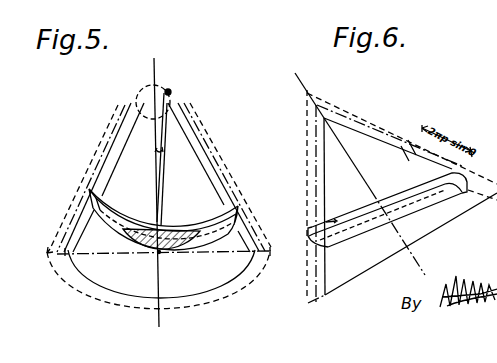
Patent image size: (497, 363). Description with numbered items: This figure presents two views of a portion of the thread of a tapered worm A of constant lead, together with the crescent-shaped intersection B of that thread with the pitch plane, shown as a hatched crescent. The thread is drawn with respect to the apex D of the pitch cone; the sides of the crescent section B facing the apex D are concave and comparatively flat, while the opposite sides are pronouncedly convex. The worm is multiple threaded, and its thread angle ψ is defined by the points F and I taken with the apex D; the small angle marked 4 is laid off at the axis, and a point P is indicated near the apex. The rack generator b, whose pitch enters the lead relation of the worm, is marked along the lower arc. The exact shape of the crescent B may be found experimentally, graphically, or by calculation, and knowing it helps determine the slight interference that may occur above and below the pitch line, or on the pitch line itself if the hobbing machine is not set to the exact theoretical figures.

In FIG. 5, the apex D is at (168, 120).
In FIG. 6, the apex D is at (315, 103).
In FIG. 5, the pivot pin P is at (171, 91).
In FIG. 5, the thread angle point F is at (168, 105).
In FIG. 5, the angle of inclination 4 is at (159, 143).
In FIG. 5, the crescent shaped intersection B is at (162, 231).
In FIG. 6, the crescent shaped intersection B is at (358, 141).
In FIG. 5, the thread angle vertex I is at (163, 254).
In FIG. 5, the rack generator b is at (158, 285).
In FIG. 6, the rack generator b is at (315, 256).
In FIG. 6, the tapered worm A is at (451, 220).